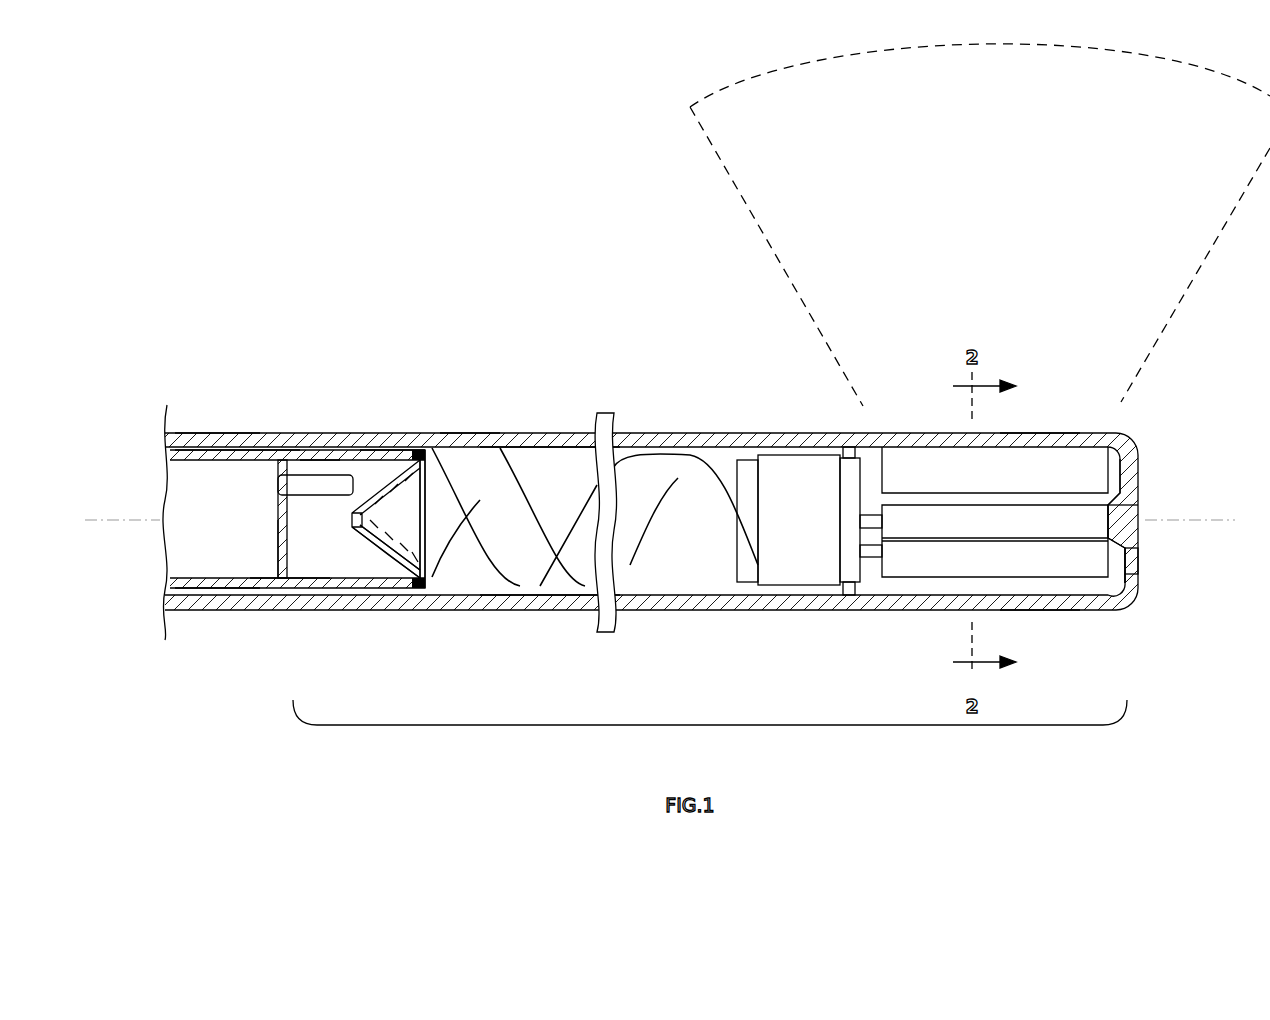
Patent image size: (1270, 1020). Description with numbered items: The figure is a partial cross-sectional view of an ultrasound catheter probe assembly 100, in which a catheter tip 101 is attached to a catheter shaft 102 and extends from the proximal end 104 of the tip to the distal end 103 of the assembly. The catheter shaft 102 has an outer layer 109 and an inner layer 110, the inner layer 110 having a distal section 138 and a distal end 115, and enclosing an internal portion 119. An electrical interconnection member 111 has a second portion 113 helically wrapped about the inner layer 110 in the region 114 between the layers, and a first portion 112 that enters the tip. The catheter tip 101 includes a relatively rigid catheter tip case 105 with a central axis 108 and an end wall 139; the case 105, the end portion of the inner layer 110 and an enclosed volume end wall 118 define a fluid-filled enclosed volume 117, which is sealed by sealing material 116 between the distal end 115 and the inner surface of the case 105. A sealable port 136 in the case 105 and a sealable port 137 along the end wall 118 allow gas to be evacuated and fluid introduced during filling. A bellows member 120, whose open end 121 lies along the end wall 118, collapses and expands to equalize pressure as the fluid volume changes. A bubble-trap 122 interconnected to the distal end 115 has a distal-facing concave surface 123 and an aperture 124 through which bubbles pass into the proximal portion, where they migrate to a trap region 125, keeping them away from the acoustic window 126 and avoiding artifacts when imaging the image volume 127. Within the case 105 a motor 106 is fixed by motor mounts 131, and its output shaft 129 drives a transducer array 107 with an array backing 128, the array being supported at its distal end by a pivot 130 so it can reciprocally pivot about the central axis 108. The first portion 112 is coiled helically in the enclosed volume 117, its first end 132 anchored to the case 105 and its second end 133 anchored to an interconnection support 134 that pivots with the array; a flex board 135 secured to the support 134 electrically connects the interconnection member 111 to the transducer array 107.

The ultrasound catheter probe assembly 100 is at (613, 242).
The catheter tip 101 is at (710, 729).
The catheter shaft 102 is at (205, 655).
The distal end 103 is at (1148, 533).
The proximal end 104 is at (280, 412).
The catheter tip case 105 is at (670, 608).
The motor 106 is at (868, 455).
The transducer array 107 is at (1120, 492).
The central axis 108 is at (1215, 517).
The outer layer 109 is at (215, 433).
The inner layer 110 is at (236, 580).
The electrical interconnection member 111 is at (532, 447).
The first portion 112 is at (550, 592).
The second portion 113 is at (262, 447).
The region 114 is at (392, 447).
The distal end of the inner layer 115 is at (426, 450).
The sealing material 116 is at (418, 595).
The enclosed volume 117 is at (535, 487).
The enclosed volume end wall 118 is at (283, 557).
The internal portion 119 is at (202, 528).
The bellows member 120 is at (320, 475).
The open end 121 is at (278, 483).
The bubble-trap 122 is at (382, 582).
The distal-facing concave surface 123 is at (432, 575).
The aperture 124 is at (345, 528).
The trap region 125 is at (398, 585).
The acoustic window 126 is at (1040, 440).
The image volume 127 is at (722, 168).
The array backing 128 is at (1050, 605).
The output shaft 129 is at (880, 497).
The pivot 130 is at (1138, 555).
The motor mounts 131 is at (847, 450).
The first end 132 is at (468, 447).
The second end 133 is at (745, 513).
The interconnection support 134 is at (800, 572).
The flex board 135 is at (870, 583).
The sealable port 136 is at (1138, 585).
The sealable port 137 is at (276, 543).
The distal section 138 is at (302, 593).
The end wall 139 is at (1138, 500).